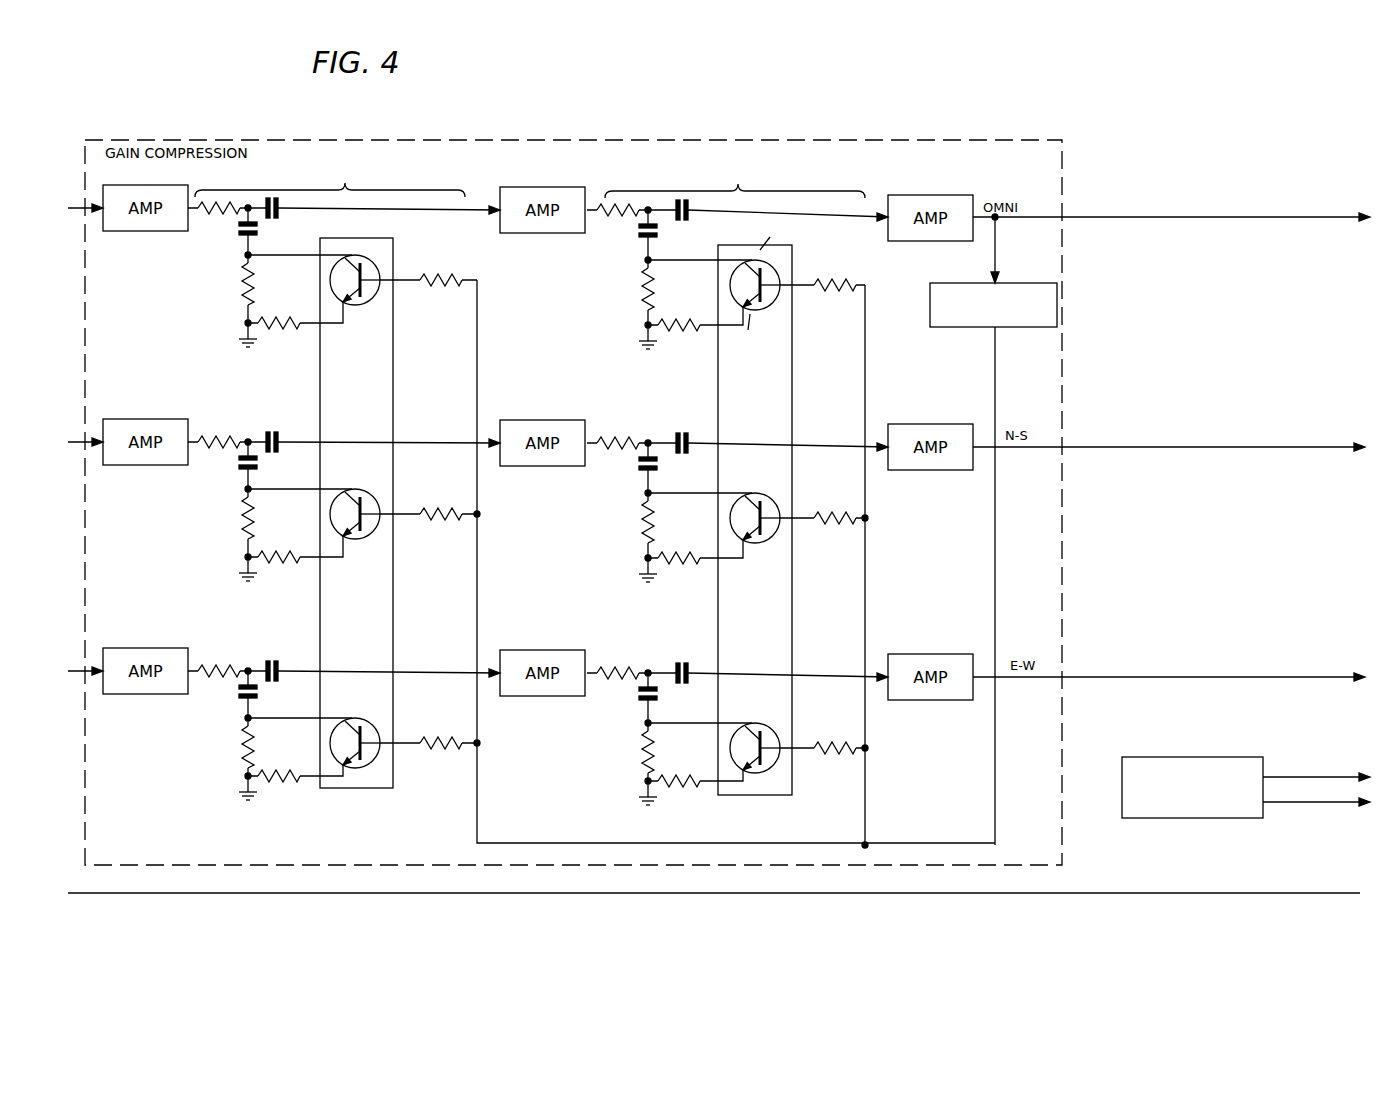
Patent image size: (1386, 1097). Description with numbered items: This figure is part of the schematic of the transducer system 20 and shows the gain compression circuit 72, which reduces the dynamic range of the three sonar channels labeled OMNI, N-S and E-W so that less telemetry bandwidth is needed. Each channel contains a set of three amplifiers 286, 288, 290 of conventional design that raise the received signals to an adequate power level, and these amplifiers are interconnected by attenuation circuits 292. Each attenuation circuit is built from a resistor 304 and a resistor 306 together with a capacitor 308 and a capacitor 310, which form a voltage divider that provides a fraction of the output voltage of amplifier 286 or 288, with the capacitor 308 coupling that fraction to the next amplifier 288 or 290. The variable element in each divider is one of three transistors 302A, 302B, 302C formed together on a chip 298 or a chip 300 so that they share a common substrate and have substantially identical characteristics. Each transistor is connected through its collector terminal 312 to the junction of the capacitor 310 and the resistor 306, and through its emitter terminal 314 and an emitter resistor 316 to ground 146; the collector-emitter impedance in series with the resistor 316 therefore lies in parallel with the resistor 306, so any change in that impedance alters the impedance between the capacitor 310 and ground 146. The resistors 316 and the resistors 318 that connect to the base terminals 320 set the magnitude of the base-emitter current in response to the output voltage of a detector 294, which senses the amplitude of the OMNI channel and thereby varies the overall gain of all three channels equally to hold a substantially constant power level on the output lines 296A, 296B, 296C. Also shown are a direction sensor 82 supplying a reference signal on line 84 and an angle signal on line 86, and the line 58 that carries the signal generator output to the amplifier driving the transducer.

The transducer system 20 is at (603, 116).
The gain compression circuit 72 is at (1000, 142).
The attenuation circuits 292 is at (423, 184).
The amplifier 286 is at (130, 232).
The amplifier 288 is at (536, 234).
The amplifier 290 is at (912, 241).
The resistor 304 is at (213, 216).
The capacitor 308 is at (278, 220).
The capacitor 310 is at (259, 230).
The resistor 306 is at (240, 284).
The emitter resistor 316 is at (670, 334).
The ground 146 is at (646, 330).
The transistor 302A is at (358, 256).
The transistor 302B is at (364, 540).
The transistor 302C is at (376, 758).
The collector terminal 312 is at (764, 236).
The emitter terminal 314 is at (756, 333).
The base terminal 320 is at (367, 303).
The resistor 318 is at (436, 288).
The chip 298 is at (355, 790).
The chip 300 is at (757, 797).
The detector 294 is at (977, 328).
The output line 296A is at (1104, 220).
The output line 296B is at (1094, 450).
The output line 296C is at (1100, 680).
The direction sensor 82 is at (1196, 818).
The line 84 is at (1338, 775).
The line 86 is at (1338, 805).
The line 58 is at (1218, 893).